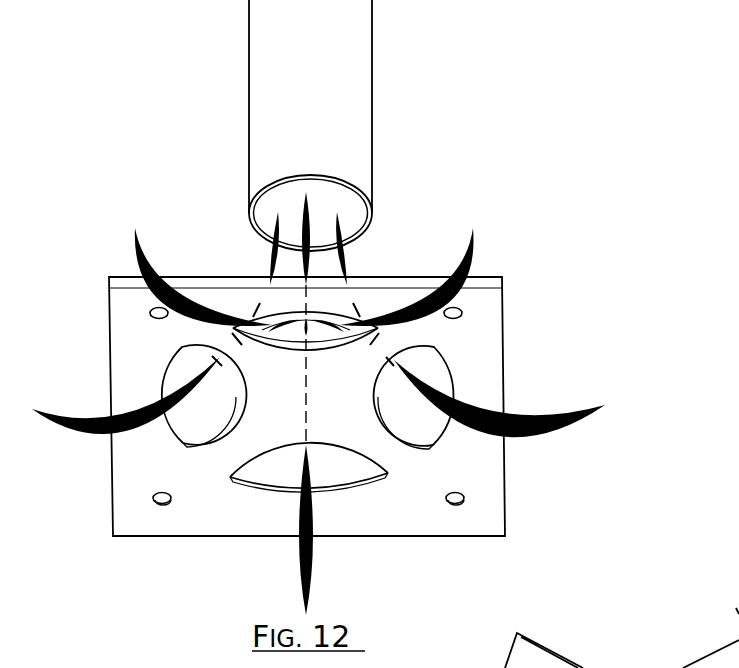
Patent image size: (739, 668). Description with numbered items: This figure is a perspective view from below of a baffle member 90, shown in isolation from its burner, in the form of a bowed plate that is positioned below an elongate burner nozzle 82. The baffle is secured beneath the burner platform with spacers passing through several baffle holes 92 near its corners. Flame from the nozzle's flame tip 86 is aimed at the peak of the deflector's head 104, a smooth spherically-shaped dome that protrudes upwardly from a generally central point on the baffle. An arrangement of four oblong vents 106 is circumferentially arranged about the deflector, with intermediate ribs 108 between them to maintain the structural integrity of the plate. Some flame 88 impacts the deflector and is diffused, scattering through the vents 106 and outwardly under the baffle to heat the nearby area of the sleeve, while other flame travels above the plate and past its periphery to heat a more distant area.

The burner nozzle 82 is at (327, 92).
The flame tip 86 is at (377, 205).
The flame 88 is at (553, 415).
The baffle member 90 is at (463, 465).
The baffle holes 92 is at (604, 667).
The head 104 is at (308, 326).
The vents 106 is at (435, 375).
The intermediate ribs 108 is at (417, 470).